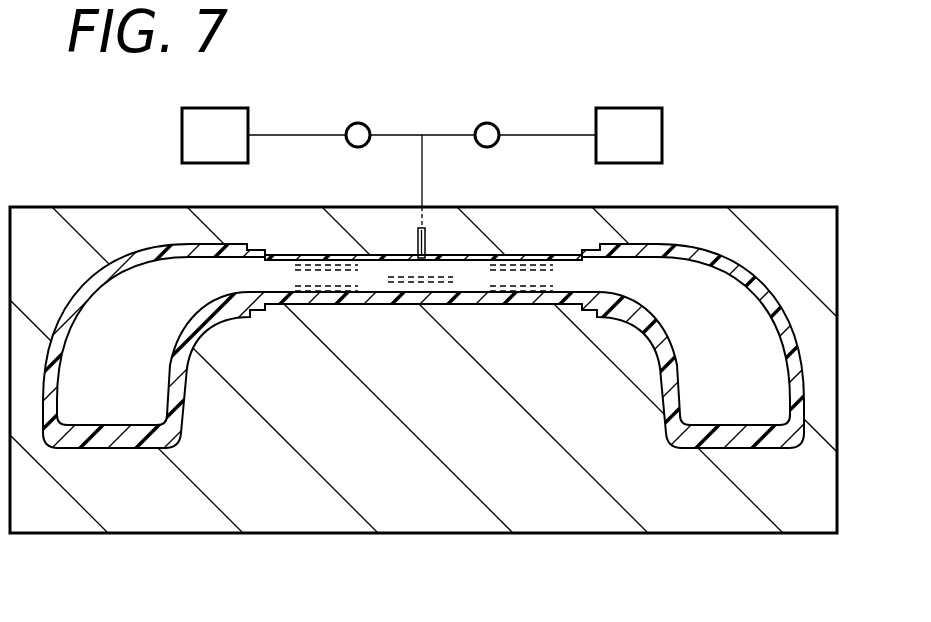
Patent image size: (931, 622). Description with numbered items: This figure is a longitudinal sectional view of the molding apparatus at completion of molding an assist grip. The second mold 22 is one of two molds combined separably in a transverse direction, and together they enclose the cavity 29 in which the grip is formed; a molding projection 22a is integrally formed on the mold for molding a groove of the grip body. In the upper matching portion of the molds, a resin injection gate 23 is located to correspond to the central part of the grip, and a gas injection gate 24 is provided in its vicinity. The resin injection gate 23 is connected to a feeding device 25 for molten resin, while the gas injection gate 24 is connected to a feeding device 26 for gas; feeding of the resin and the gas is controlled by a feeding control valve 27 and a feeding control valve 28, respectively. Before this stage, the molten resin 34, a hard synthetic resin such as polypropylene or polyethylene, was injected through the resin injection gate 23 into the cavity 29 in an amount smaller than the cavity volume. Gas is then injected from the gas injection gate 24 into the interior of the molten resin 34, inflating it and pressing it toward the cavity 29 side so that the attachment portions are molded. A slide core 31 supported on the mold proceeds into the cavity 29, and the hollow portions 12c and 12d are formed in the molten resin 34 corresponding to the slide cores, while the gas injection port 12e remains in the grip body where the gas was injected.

The second mold 22 is at (770, 207).
The molding projection 22a is at (335, 272).
The resin injection gate 23 is at (417, 232).
The gas injection gate 24 is at (428, 206).
The feeding device for molten resin 25 is at (205, 107).
The feeding device for gas 26 is at (640, 107).
The feeding control valve for molten resin 27 is at (350, 126).
The feeding control valve for gas 28 is at (494, 126).
The cavity 29 is at (706, 262).
The slide core 31 is at (441, 283).
The molten resin 34 is at (390, 304).
The hollow portion 12c is at (431, 258).
The hollow portion 12d is at (427, 300).
The gas injection port 12e is at (414, 253).